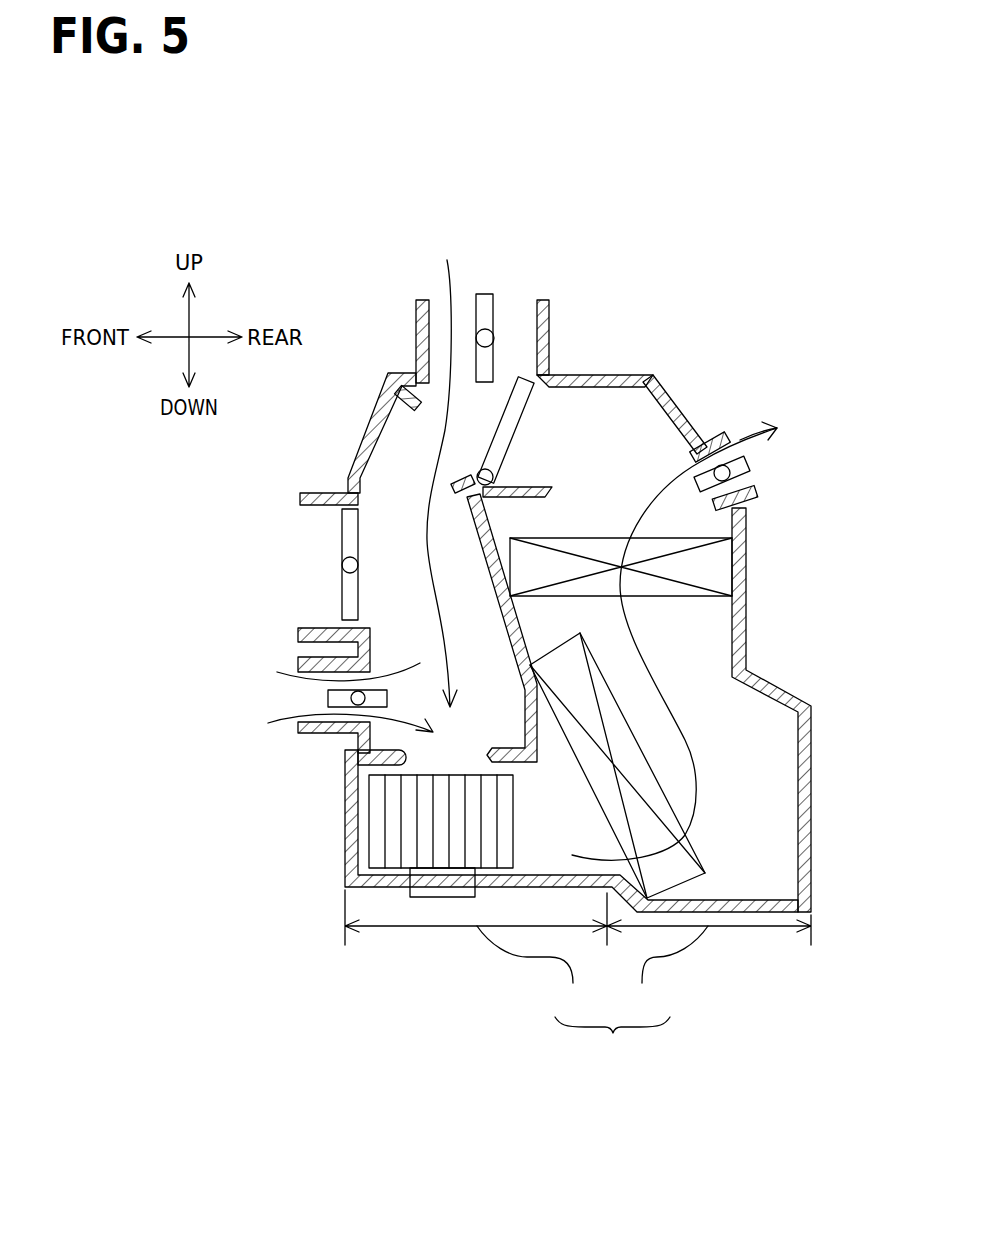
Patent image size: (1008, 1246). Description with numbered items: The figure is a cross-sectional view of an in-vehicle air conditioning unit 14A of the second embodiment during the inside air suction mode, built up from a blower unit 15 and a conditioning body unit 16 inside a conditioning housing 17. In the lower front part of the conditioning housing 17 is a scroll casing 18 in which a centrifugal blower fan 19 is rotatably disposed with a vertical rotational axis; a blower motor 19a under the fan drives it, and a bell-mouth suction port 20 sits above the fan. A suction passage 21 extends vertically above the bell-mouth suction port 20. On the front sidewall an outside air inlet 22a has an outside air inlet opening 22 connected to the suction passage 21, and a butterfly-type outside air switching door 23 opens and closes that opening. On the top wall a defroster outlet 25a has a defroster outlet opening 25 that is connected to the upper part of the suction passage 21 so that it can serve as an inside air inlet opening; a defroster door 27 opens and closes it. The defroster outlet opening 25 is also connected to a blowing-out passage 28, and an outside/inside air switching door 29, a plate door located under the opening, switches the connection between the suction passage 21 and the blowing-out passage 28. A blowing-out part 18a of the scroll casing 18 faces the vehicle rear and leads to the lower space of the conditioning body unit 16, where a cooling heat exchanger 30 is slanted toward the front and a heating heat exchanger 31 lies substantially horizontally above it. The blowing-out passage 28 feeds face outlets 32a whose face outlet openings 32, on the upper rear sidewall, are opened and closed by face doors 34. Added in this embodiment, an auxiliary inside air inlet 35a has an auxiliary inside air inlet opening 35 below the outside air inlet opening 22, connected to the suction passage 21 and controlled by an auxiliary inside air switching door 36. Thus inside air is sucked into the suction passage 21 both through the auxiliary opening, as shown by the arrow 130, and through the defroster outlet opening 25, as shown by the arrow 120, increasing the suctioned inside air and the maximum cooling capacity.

The in-vehicle air conditioning unit 14A is at (612, 1043).
The blower unit 15 is at (532, 971).
The conditioning body unit 16 is at (668, 971).
The conditioning housing 17 is at (746, 627).
The scroll casing 18 is at (345, 818).
The blowing-out part 18a is at (565, 812).
The centrifugal blower fan 19 is at (380, 792).
The blower motor 19a is at (428, 885).
The bell-mouth suction port 20 is at (355, 740).
The suction passage 21 is at (350, 683).
The outside air inlet opening 22 is at (320, 540).
The outside air inlet 22a is at (318, 493).
The outside air switching door 23 is at (347, 587).
The defroster outlet opening 25 is at (513, 313).
The defroster outlet 25a is at (549, 304).
The defroster door 27 is at (487, 300).
The blowing-out passage 28 is at (613, 458).
The outside/inside air switching door 29 is at (508, 420).
The cooling heat exchanger 30 is at (633, 770).
The heating heat exchanger 31 is at (713, 567).
The face outlet opening 32 is at (737, 482).
The face outlet 32a is at (742, 498).
The face door 34 is at (750, 462).
The auxiliary inside air inlet opening 35 is at (308, 703).
The auxiliary inside air inlet 35a is at (312, 652).
The auxiliary inside air switching door 36 is at (327, 697).
The arrow 120 is at (433, 448).
The arrow 130 is at (298, 726).